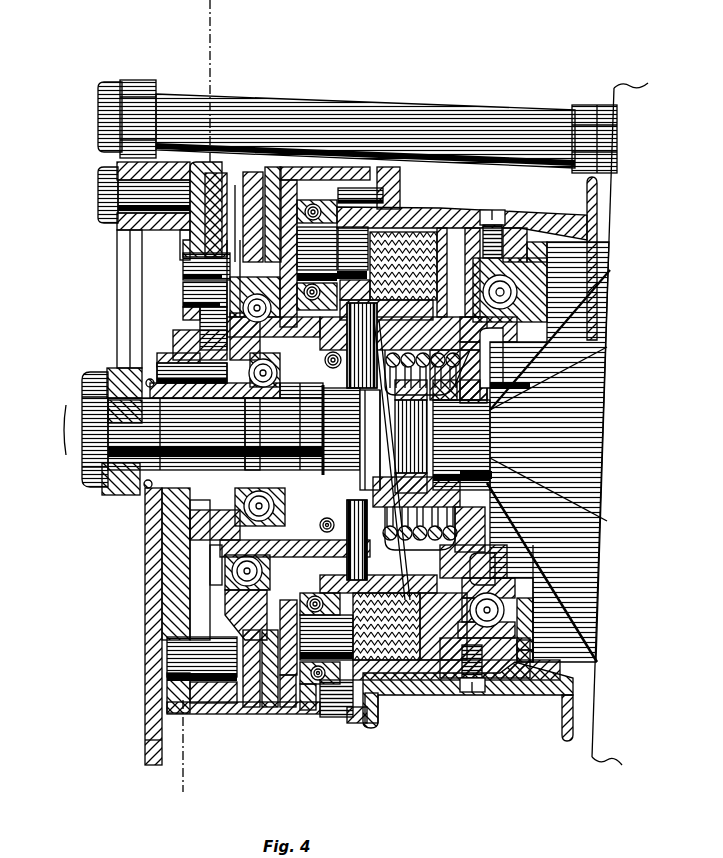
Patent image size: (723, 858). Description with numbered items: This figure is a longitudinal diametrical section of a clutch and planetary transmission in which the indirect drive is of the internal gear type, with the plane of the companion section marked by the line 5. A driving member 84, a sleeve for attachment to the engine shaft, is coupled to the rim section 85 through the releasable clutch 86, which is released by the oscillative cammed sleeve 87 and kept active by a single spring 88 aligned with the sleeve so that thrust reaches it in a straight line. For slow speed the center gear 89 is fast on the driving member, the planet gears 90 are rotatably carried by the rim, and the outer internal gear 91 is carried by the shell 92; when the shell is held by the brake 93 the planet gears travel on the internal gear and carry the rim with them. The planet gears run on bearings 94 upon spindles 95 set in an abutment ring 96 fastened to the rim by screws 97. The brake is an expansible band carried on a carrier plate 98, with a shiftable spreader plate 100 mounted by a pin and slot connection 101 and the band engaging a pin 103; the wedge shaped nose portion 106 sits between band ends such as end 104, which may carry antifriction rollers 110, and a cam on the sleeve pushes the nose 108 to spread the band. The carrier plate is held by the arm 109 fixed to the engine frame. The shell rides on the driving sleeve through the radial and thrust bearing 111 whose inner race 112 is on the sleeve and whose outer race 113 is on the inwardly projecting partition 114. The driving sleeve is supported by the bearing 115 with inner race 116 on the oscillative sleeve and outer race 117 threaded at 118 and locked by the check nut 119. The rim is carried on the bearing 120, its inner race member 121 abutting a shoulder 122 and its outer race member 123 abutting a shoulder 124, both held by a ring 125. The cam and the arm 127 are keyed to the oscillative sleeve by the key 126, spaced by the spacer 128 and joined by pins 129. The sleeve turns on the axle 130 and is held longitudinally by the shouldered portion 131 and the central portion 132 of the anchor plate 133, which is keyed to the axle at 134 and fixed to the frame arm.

The section line 5- 5 is at (213, 41).
The driving member 84 is at (458, 395).
The rim section 85 is at (598, 234).
The releasable clutch 86 is at (410, 232).
The oscillative cammed sleeve 87 is at (230, 398).
The spring 88 is at (610, 328).
The center gear 89 is at (272, 697).
The planet gears 90 is at (288, 707).
The outer internal gear 91 is at (310, 707).
The shell 92 is at (337, 723).
The brake 93 is at (190, 690).
The bearings 94 is at (320, 185).
The spindles 95 is at (378, 697).
The abutment ring 96 is at (357, 718).
The screws 97 is at (382, 693).
The carrier plate 98 is at (190, 244).
The spreader plate 100 is at (188, 261).
The pin and slot connection 101 is at (184, 291).
The pin 103 is at (170, 658).
The spaced end of brake 104 is at (252, 188).
The wedge shaped nose portion 106 is at (213, 185).
The nose 108 is at (178, 341).
The arm 109 is at (325, 108).
The antifriction rollers 110 is at (230, 183).
The radial and thrust antifriction bearing 111 is at (223, 568).
The inner race 112 is at (220, 547).
The outer race 113 is at (223, 588).
The inwardly projecting partition 114 is at (240, 627).
The radial and thrust antifriction bearing 115 is at (240, 508).
The inner race 116 is at (253, 448).
The outer race 117 is at (240, 518).
The threaded connection 118 is at (227, 330).
The check nut 119 is at (200, 358).
The combined radial and thrust bearing 120 is at (515, 612).
The inner race member 121 is at (512, 590).
The shoulder 122 is at (478, 563).
The outer race member 123 is at (530, 643).
The shoulder 124 is at (532, 651).
The ring 125 is at (548, 290).
The key 126 is at (183, 443).
The arm 127 is at (152, 763).
The spacer 128 is at (148, 492).
The pins 129 is at (163, 424).
The axle 130 is at (140, 430).
The shouldered portion 131 is at (322, 448).
The central portion of anchor plate 132 is at (85, 482).
The anchor plate 133 is at (128, 292).
The key 134 is at (118, 398).